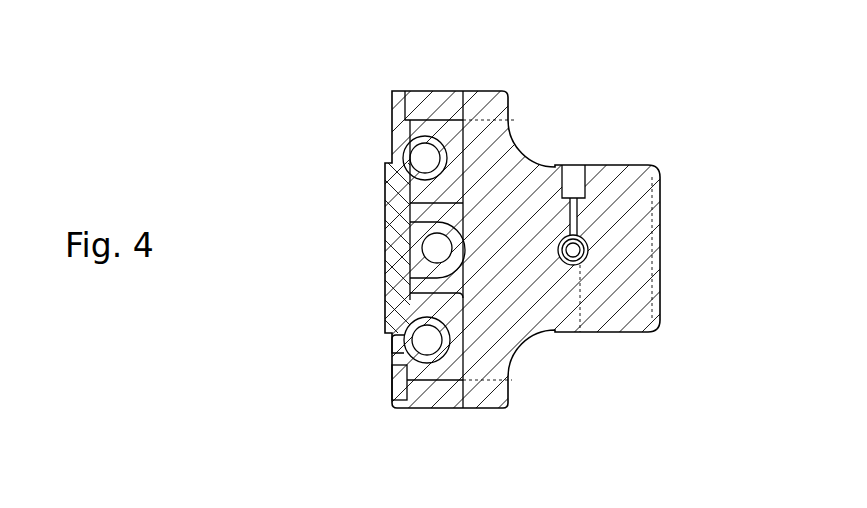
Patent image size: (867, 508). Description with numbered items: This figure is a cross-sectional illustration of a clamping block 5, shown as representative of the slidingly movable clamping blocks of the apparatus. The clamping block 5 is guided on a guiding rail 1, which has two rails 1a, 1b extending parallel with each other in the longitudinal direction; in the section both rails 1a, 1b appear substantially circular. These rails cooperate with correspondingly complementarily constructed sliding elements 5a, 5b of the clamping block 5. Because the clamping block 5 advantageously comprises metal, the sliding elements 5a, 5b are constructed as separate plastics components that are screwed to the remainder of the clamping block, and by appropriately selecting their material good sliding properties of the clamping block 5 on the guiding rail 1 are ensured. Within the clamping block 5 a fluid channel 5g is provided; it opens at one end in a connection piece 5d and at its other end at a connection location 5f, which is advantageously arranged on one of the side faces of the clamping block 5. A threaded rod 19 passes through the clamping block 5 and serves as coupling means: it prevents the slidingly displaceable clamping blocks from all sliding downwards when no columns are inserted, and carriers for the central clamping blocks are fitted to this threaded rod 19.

The guiding rail 1 is at (397, 212).
The rail 1a is at (415, 147).
The rail 1b is at (420, 347).
The clamping block 5 is at (670, 90).
The sliding element 5a is at (448, 128).
The sliding element 5b is at (425, 400).
The connection piece 5d is at (590, 253).
The connection location 5f is at (567, 172).
The fluid channel 5g is at (573, 222).
The threaded rod 19 is at (437, 248).